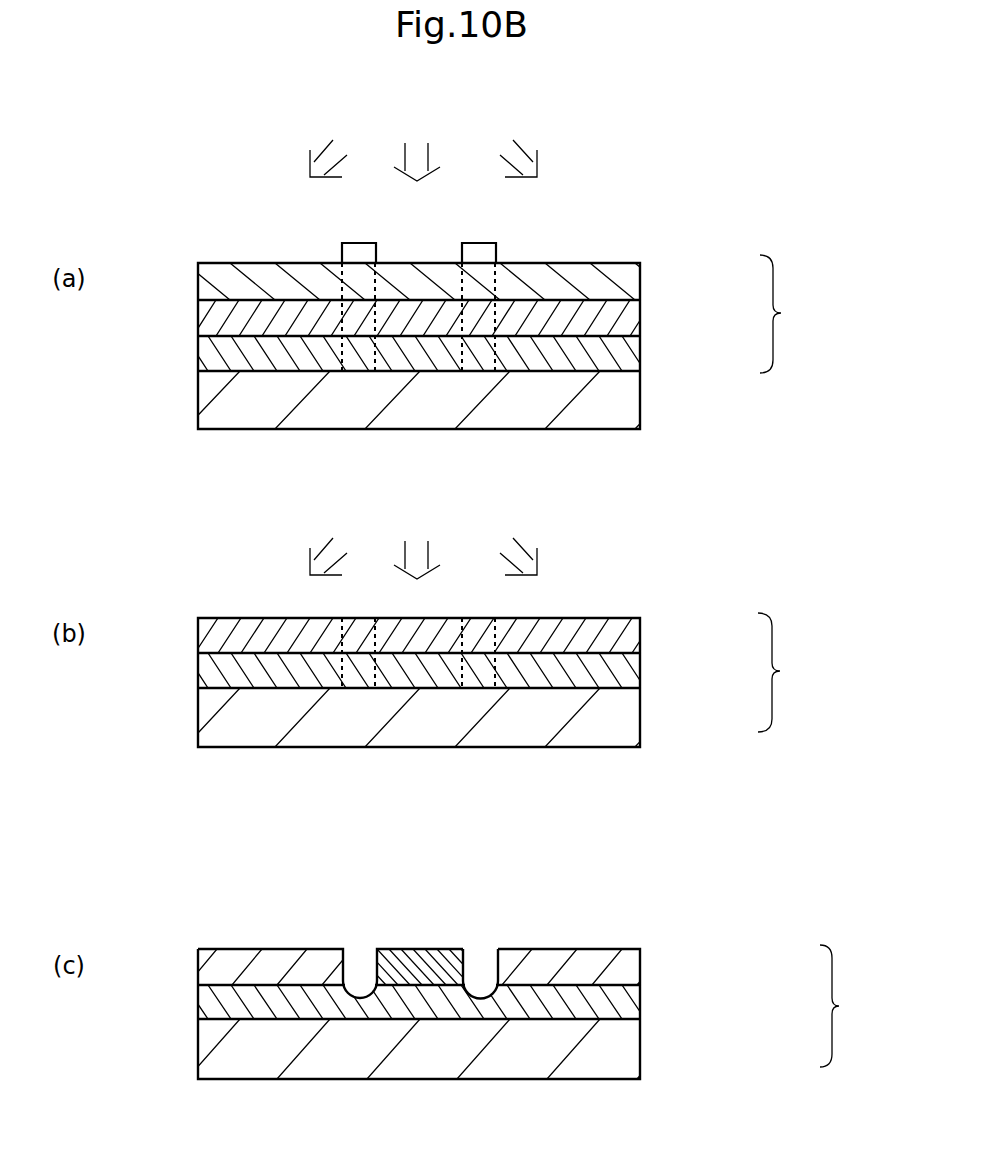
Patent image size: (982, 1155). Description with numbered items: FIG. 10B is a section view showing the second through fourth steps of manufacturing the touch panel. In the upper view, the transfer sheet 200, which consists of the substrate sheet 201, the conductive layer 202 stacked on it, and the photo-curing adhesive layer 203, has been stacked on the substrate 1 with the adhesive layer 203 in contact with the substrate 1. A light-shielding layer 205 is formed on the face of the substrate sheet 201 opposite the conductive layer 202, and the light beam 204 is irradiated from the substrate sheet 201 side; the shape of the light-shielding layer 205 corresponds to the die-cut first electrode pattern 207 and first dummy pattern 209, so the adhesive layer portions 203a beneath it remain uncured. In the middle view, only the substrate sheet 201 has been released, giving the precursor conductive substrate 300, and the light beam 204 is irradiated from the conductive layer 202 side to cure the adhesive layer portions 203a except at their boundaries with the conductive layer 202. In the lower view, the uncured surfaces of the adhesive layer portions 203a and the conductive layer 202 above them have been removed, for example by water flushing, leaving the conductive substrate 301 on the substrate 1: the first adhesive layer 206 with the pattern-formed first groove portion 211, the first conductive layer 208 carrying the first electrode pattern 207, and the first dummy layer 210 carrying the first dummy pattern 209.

The substrate 1 is at (697, 1047).
The transfer sheet 200 is at (796, 314).
The substrate sheet 201 is at (627, 279).
The conductive layer 202 is at (697, 637).
The adhesive layer 203 is at (697, 671).
The adhesive layer portions 203a is at (480, 767).
The light beam 204 is at (423, 341).
The light-shielding layer 205 is at (478, 254).
The first adhesive layer 206 is at (629, 1001).
The first electrode pattern 207 is at (423, 946).
The first conductive layer 208 is at (423, 962).
The first dummy pattern 209 is at (498, 939).
The first dummy layer 210 is at (697, 965).
The first groove portion 211 is at (480, 980).
The precursor conductive substrate 300 is at (796, 672).
The conductive substrate 301 is at (855, 1006).